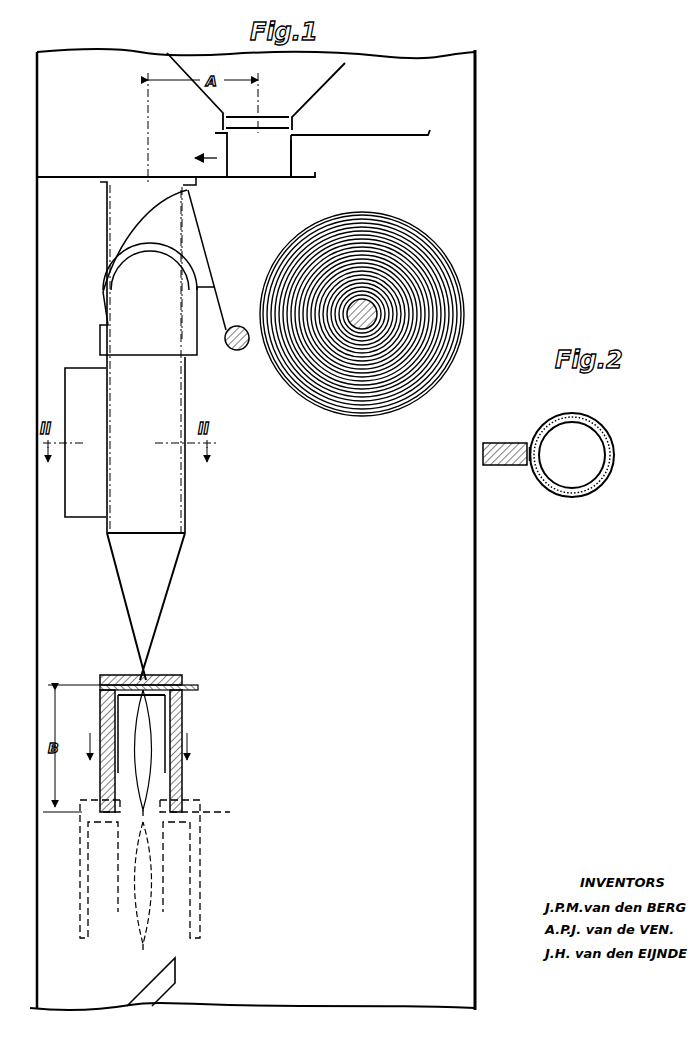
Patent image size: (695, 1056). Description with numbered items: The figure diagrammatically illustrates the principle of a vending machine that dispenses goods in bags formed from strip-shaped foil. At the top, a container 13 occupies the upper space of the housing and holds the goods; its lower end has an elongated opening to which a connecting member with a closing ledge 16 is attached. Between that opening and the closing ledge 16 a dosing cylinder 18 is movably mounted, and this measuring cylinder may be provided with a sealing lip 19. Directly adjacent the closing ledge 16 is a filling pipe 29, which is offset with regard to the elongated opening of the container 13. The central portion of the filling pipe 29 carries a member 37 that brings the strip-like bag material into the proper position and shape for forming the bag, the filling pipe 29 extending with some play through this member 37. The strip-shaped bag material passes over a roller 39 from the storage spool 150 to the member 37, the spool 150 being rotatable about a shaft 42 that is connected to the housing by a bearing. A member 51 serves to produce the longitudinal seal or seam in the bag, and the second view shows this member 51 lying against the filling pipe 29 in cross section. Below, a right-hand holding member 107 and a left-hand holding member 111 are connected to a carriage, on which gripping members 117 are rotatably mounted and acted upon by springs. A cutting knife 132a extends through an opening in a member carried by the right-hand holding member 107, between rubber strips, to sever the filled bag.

In FIG. 1, the container 13 is at (305, 104).
In FIG. 1, the sealing lip 19 is at (360, 135).
In FIG. 1, the dosing cylinder 18 is at (292, 154).
In FIG. 1, the closing ledge 16 is at (198, 180).
In FIG. 1, the filling pipe 29 is at (105, 220).
In FIG. 2, the filling pipe 29 is at (597, 425).
In FIG. 1, the member 37 is at (193, 250).
In FIG. 1, the roller 39 is at (242, 351).
In FIG. 1, the shaft 42 is at (370, 300).
In FIG. 1, the storage spool 150 is at (360, 407).
In FIG. 1, the member for producing the longitudinal seal 51 is at (73, 516).
In FIG. 2, the member for producing the longitudinal seal 51 is at (503, 441).
In FIG. 1, the left-hand holding member 111 is at (108, 675).
In FIG. 1, the right-hand holding member 107 is at (175, 675).
In FIG. 1, the cutting knife 132a is at (198, 687).
In FIG. 1, the gripping members 117 is at (166, 718).